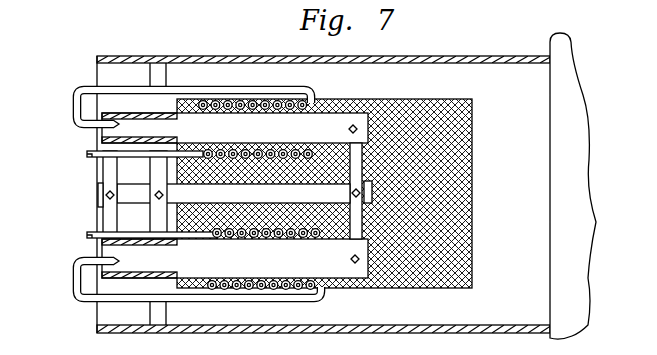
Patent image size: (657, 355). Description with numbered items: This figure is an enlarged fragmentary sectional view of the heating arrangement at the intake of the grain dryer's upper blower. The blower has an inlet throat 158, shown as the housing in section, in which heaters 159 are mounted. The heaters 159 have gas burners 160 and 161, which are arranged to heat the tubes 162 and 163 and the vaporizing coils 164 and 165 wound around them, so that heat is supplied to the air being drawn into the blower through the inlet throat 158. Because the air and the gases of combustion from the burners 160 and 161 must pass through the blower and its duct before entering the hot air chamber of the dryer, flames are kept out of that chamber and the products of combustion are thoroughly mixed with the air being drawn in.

The inlet throat 158 is at (213, 55).
The heaters 159 is at (73, 93).
The gas burner 160 is at (118, 125).
The gas burner 161 is at (118, 261).
The tube 162 is at (287, 140).
The tube 163 is at (297, 268).
The vaporizing coil 164 is at (214, 106).
The vaporizing coil 165 is at (229, 237).